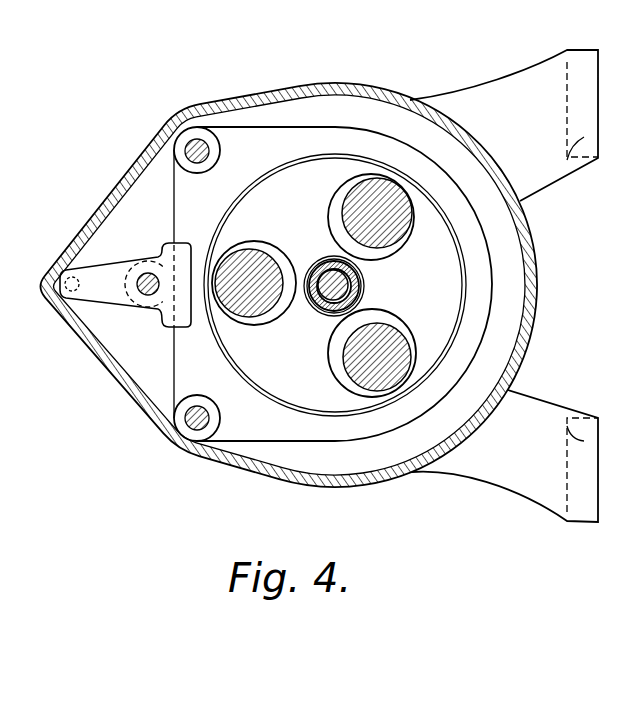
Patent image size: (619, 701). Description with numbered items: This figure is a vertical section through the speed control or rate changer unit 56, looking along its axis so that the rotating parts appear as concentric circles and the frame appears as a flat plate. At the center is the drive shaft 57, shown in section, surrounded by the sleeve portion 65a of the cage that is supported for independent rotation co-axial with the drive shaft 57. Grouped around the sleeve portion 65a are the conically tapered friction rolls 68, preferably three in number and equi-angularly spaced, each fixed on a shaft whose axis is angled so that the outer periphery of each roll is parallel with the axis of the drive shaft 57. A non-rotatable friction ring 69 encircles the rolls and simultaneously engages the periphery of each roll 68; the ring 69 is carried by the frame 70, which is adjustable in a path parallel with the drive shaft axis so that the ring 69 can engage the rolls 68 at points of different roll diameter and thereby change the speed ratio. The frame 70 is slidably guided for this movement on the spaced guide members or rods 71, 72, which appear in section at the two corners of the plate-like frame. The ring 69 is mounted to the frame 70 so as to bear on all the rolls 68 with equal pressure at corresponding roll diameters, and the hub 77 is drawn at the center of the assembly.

The speed control or rate changer unit 56 is at (534, 338).
The frame 70 is at (497, 290).
The guide member or rod 72 is at (209, 151).
The guide member or rod 71 is at (209, 418).
The friction ring 69 is at (258, 378).
The conically tapered friction rolls 68 is at (308, 226).
The hub 77 is at (330, 309).
The sleeve portion 65a is at (354, 278).
The drive shaft 57 is at (348, 289).